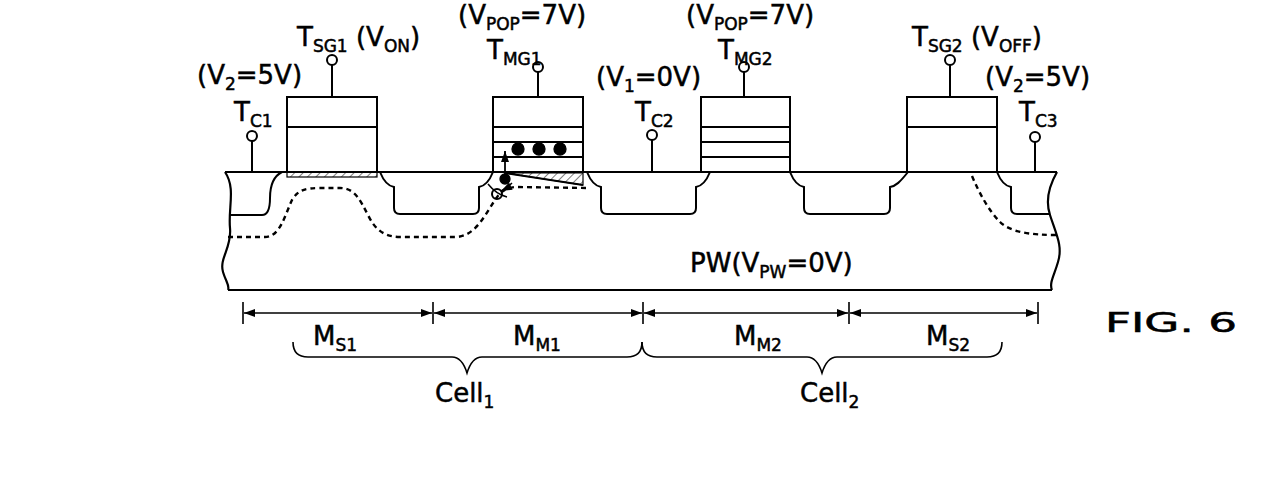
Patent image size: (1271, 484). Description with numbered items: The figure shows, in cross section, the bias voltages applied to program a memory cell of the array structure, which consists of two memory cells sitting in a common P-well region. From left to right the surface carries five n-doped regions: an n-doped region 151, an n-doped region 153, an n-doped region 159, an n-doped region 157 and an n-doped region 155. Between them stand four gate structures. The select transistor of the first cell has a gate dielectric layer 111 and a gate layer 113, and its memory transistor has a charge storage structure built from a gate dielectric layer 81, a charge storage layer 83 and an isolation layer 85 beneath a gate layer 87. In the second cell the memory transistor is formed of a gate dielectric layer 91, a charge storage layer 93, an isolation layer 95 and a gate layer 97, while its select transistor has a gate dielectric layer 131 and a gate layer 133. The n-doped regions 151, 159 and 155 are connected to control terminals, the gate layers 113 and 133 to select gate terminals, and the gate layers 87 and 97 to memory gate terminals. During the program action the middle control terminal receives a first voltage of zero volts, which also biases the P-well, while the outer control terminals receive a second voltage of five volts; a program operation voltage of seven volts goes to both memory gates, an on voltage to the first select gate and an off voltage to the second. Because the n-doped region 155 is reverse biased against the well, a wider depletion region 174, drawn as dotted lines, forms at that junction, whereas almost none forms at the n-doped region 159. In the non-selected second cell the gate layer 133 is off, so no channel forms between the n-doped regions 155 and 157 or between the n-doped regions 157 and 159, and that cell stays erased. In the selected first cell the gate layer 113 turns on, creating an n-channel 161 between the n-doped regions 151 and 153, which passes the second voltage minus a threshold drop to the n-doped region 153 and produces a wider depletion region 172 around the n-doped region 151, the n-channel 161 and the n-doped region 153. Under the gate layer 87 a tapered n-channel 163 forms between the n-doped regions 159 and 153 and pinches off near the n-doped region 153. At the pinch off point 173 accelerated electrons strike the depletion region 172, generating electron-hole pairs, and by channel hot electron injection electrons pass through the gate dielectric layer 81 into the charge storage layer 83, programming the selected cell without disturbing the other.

The gate dielectric layer 81 is at (494, 158).
The charge storage layer 83 is at (494, 143).
The isolation layer 85 is at (494, 128).
The gate layer 87 is at (494, 99).
The gate dielectric layer 91 is at (790, 158).
The charge storage layer 93 is at (790, 143).
The isolation layer 95 is at (790, 130).
The gate layer 97 is at (790, 101).
The gate dielectric layer 111 is at (355, 167).
The gate layer 113 is at (363, 100).
The gate dielectric layer 131 is at (975, 167).
The gate layer 133 is at (918, 101).
The n-doped region 151 is at (252, 216).
The n-doped region 153 is at (455, 215).
The n-doped region 155 is at (1027, 215).
The n-doped region 157 is at (880, 215).
The n-doped region 159 is at (645, 215).
The n-channel 161 is at (327, 178).
The tapered n-channel 163 is at (560, 186).
The depletion region 172 is at (402, 238).
The pinch off point 173 is at (505, 198).
The depletion region 174 is at (996, 220).